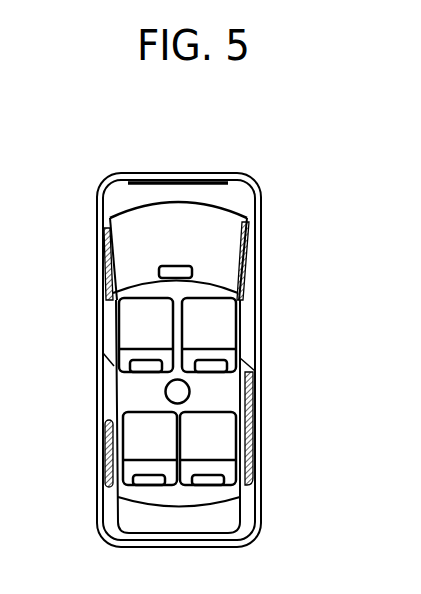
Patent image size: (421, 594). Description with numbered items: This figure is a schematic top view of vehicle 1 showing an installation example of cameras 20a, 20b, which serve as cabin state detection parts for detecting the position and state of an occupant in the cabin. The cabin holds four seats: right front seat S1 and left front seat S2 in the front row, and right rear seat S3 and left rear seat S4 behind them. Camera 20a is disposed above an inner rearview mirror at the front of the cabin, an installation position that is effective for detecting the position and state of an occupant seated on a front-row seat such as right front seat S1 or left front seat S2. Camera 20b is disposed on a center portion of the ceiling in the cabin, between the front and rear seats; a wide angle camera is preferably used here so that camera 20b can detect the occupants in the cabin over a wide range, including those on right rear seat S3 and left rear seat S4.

The vehicle 1 is at (177, 173).
The camera 20a is at (192, 273).
The camera 20b is at (184, 391).
The right front seat S1 is at (214, 333).
The left front seat S2 is at (145, 331).
The right rear seat S3 is at (214, 443).
The left rear seat S4 is at (145, 442).